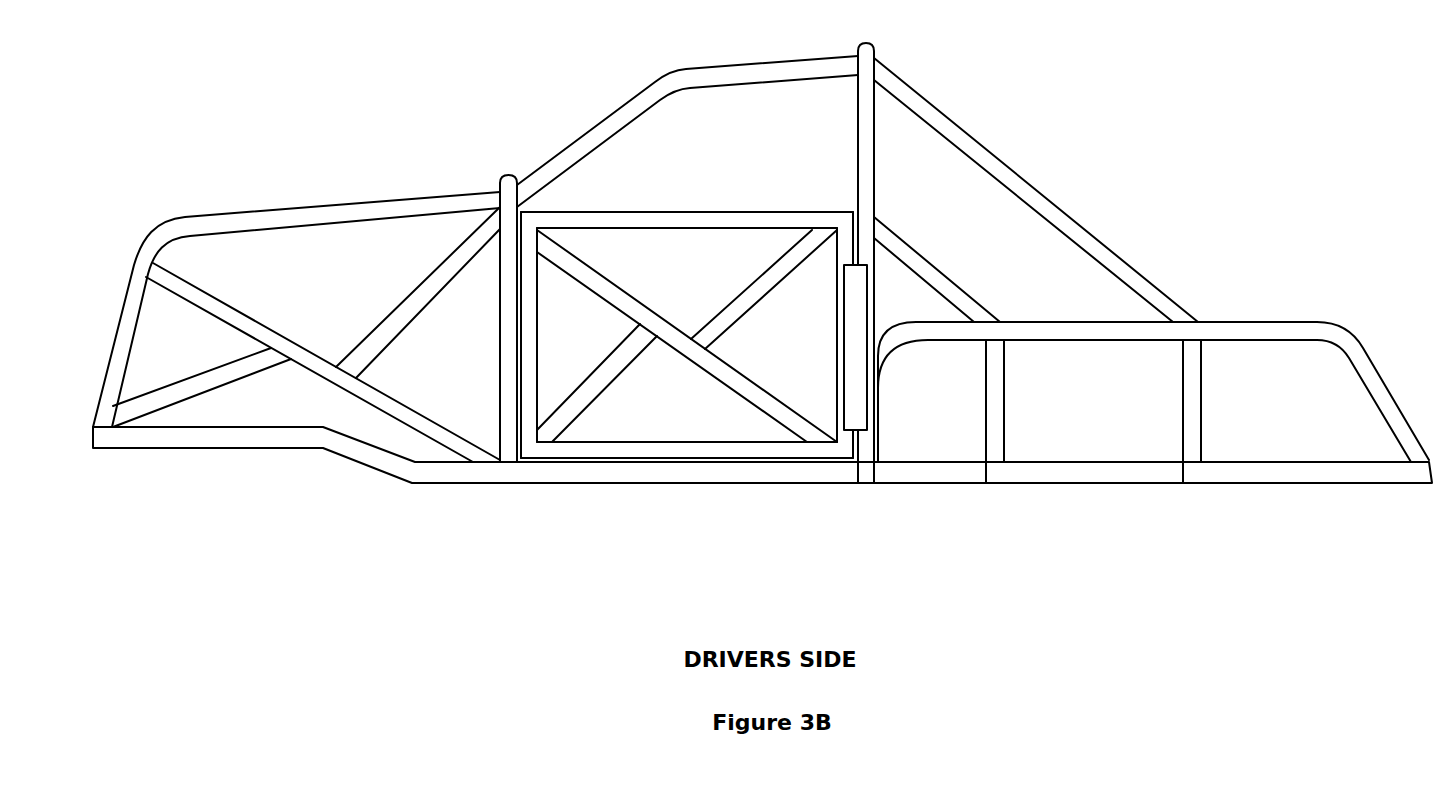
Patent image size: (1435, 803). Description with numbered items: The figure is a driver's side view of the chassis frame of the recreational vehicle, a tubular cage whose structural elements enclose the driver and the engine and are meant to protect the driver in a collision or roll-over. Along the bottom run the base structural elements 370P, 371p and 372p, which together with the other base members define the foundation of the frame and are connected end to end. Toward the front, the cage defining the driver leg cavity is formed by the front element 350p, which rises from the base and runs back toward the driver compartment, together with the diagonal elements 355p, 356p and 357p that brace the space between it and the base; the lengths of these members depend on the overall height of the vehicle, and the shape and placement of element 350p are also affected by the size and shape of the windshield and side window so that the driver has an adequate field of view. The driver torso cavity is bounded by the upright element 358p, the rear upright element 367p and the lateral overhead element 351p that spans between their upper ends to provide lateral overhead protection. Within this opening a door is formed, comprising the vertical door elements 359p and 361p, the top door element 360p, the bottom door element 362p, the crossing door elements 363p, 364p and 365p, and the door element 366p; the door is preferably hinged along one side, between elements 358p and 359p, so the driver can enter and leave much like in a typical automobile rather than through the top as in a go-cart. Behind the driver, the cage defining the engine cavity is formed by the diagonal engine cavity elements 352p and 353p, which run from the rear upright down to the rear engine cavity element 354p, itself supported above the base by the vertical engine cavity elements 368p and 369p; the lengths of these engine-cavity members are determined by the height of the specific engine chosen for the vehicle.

The driver leg cavity cage element 350p is at (252, 218).
The lateral overhead element 351p is at (680, 80).
The engine cavity cage element 352p is at (925, 268).
The engine cavity cage element 353p is at (928, 110).
The engine cavity cage element 354p is at (1273, 330).
The driver leg cavity cage element 355p is at (178, 388).
The driver leg cavity cage element 356p is at (253, 328).
The driver leg cavity cage element 357p is at (435, 285).
The driver torso cavity cage element 358p is at (507, 347).
The door element 359p is at (528, 297).
The door element 360p is at (640, 213).
The door element 361p is at (847, 245).
The door element 362p is at (708, 453).
The door element 363p is at (622, 303).
The door element 364p is at (570, 412).
The door element 365p is at (735, 312).
The door element 366p is at (866, 383).
The driver torso cavity cage element 367p is at (866, 172).
The engine cavity cage element 368p is at (997, 413).
The engine cavity cage element 369p is at (1192, 408).
The base structural element 370P is at (587, 470).
The base structural element 371p is at (925, 470).
The base structural element 372p is at (1193, 470).